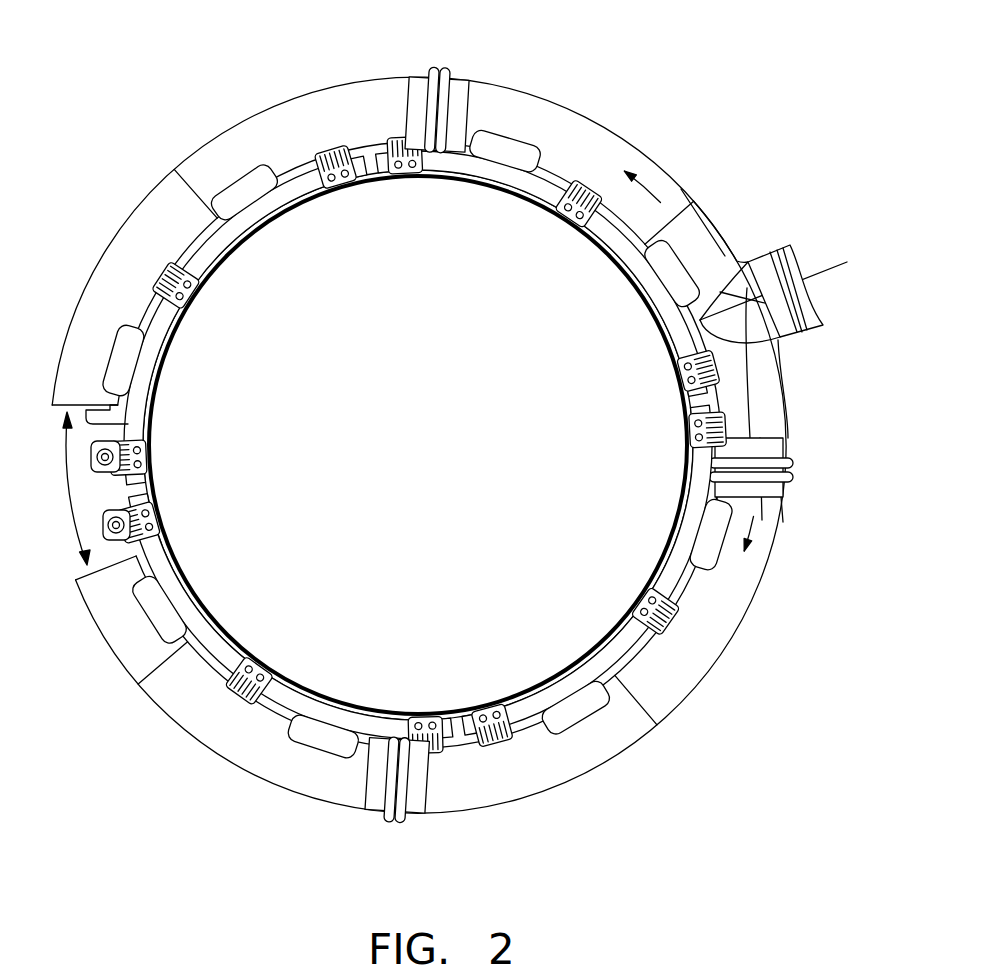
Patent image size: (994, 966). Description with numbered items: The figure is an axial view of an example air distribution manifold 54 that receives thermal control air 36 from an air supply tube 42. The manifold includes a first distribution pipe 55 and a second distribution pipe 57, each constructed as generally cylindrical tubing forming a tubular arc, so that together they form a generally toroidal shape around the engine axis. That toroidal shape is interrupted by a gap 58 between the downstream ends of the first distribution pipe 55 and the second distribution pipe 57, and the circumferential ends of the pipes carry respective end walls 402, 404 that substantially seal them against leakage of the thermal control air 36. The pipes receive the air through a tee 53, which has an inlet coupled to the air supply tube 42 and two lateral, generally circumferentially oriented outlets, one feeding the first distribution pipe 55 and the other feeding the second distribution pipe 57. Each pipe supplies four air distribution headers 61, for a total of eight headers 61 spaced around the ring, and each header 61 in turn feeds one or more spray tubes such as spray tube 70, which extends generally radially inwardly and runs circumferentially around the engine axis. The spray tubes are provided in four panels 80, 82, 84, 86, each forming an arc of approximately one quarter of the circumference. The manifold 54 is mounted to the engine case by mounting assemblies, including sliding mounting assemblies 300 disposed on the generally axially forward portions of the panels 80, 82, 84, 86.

The air distribution manifold 54 is at (678, 67).
The second distribution pipe 57 is at (477, 103).
The first distribution pipe 55 is at (450, 785).
The tee 53 is at (747, 284).
The thermal control air 36 is at (810, 307).
The air supply tube 42 is at (808, 316).
The gap 58 is at (69, 490).
The spray tube 70 is at (533, 197).
The air distribution header 61 is at (507, 160).
The sliding mounting assembly 300 is at (343, 183).
The panel 80 is at (207, 260).
The panel 82 is at (235, 657).
The panel 84 is at (630, 627).
The panel 86 is at (604, 270).
The end wall 402 is at (150, 545).
The end wall 404 is at (128, 424).